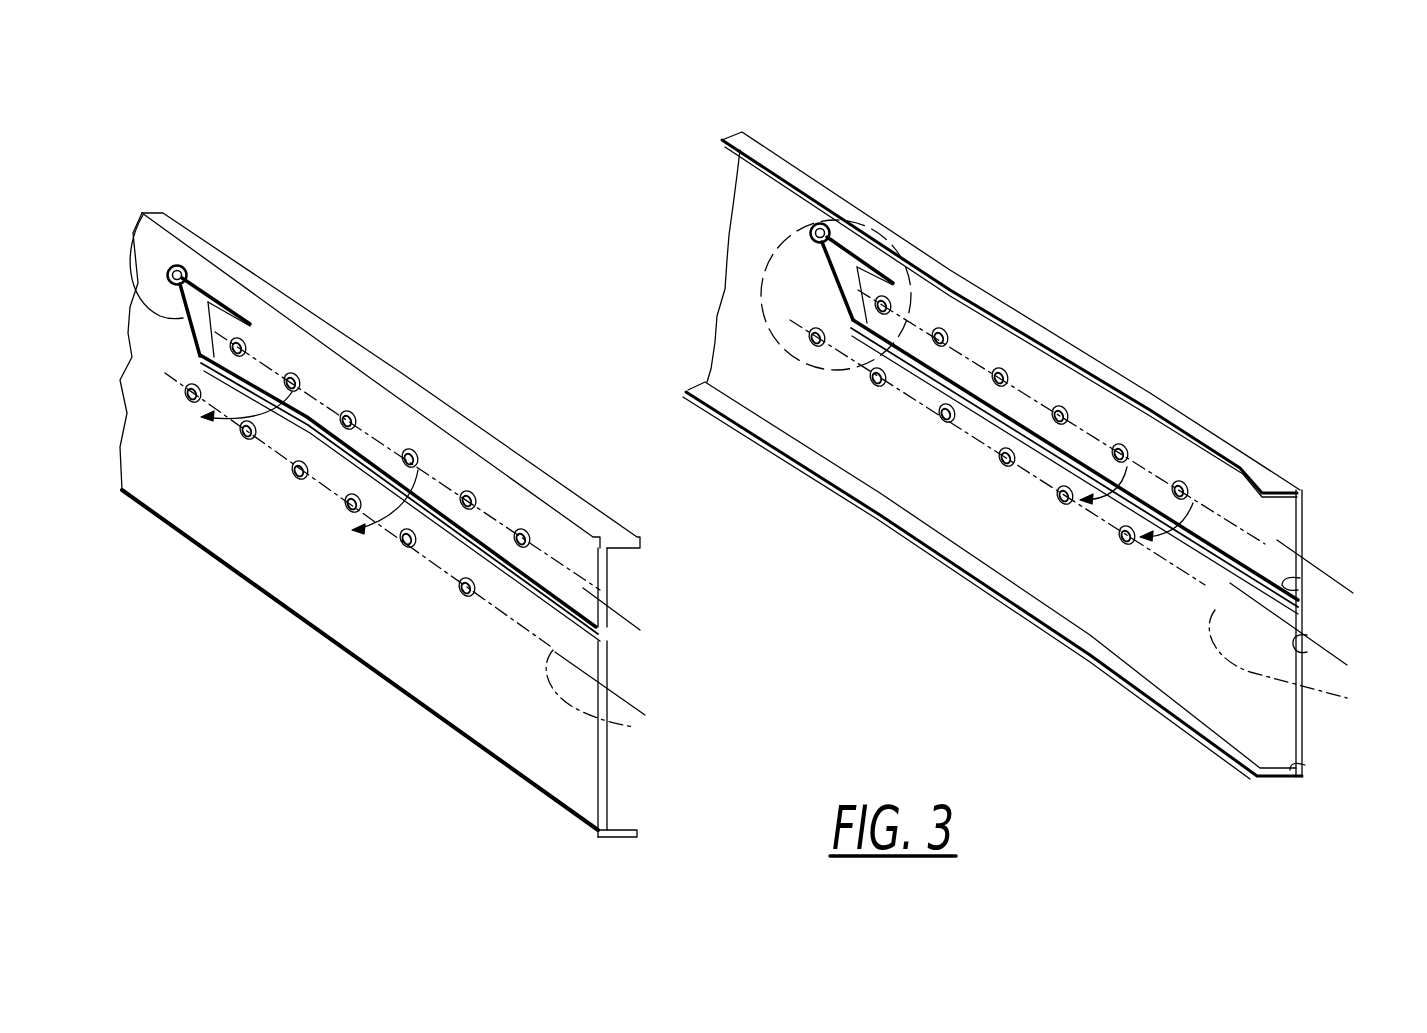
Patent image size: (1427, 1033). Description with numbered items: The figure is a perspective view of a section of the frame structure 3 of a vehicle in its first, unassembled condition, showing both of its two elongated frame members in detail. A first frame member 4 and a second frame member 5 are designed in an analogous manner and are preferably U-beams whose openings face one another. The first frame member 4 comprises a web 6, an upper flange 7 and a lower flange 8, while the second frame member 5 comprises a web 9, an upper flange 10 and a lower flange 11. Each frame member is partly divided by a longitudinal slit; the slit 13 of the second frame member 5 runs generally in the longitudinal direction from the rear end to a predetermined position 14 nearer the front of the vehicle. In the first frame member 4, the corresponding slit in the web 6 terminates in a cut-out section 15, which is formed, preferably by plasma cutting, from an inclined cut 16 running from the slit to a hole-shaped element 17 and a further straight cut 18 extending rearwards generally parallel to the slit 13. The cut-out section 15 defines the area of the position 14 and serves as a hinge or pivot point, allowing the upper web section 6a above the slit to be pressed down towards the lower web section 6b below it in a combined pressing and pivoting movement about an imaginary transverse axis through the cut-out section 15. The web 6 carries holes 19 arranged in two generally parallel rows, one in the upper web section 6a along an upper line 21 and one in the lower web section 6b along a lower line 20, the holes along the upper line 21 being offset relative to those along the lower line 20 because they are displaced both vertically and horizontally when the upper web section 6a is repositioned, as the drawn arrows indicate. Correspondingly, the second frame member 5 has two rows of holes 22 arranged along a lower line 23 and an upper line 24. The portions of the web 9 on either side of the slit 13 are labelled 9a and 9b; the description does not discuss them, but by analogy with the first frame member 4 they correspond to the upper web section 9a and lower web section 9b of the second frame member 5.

The frame structure 3 is at (1052, 182).
The first frame member 4 is at (462, 740).
The second frame member 5 is at (1223, 440).
The web 6 is at (248, 563).
The upper web section 6a is at (607, 622).
The lower web section 6b is at (607, 660).
The upper flange 7 is at (612, 548).
The lower flange 8 is at (605, 832).
The web 9 is at (733, 306).
The upper web portion of second profile 9a is at (1300, 578).
The lower web portion of second profile 9b is at (1307, 635).
The upper flange 10 is at (1265, 480).
The lower flange 11 is at (1300, 765).
The slit 13 is at (315, 420).
The predetermined position 14 is at (836, 220).
The cut-out section 15 is at (197, 310).
The inclined cut 16 is at (135, 260).
The hole-shaped element 17 is at (177, 264).
The straight cut 18 is at (237, 307).
The holes 19 is at (518, 550).
The lower line 20 is at (635, 727).
The upper line 21 is at (640, 585).
The holes 22 is at (1003, 468).
The lower line 23 is at (1347, 698).
The upper line 24 is at (1270, 540).